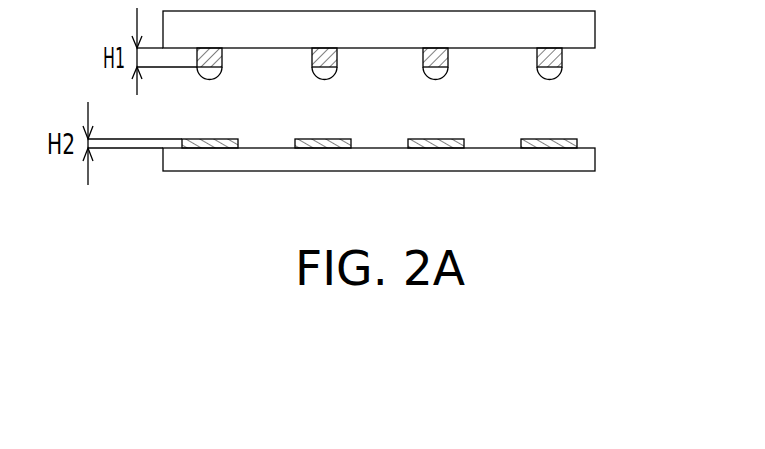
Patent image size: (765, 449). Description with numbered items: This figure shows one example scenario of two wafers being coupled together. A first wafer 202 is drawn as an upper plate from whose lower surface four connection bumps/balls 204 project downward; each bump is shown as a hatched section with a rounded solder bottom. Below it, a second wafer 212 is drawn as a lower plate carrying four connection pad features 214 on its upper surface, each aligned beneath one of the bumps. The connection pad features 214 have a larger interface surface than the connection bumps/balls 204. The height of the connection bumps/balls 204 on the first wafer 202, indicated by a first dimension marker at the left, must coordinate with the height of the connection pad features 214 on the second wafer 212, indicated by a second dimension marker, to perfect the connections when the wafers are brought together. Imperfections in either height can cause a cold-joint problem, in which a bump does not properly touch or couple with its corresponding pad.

The first wafer 202 is at (588, 30).
The connection bumps/balls 204 is at (553, 60).
The second wafer 212 is at (589, 157).
The connection pad features 214 is at (578, 143).